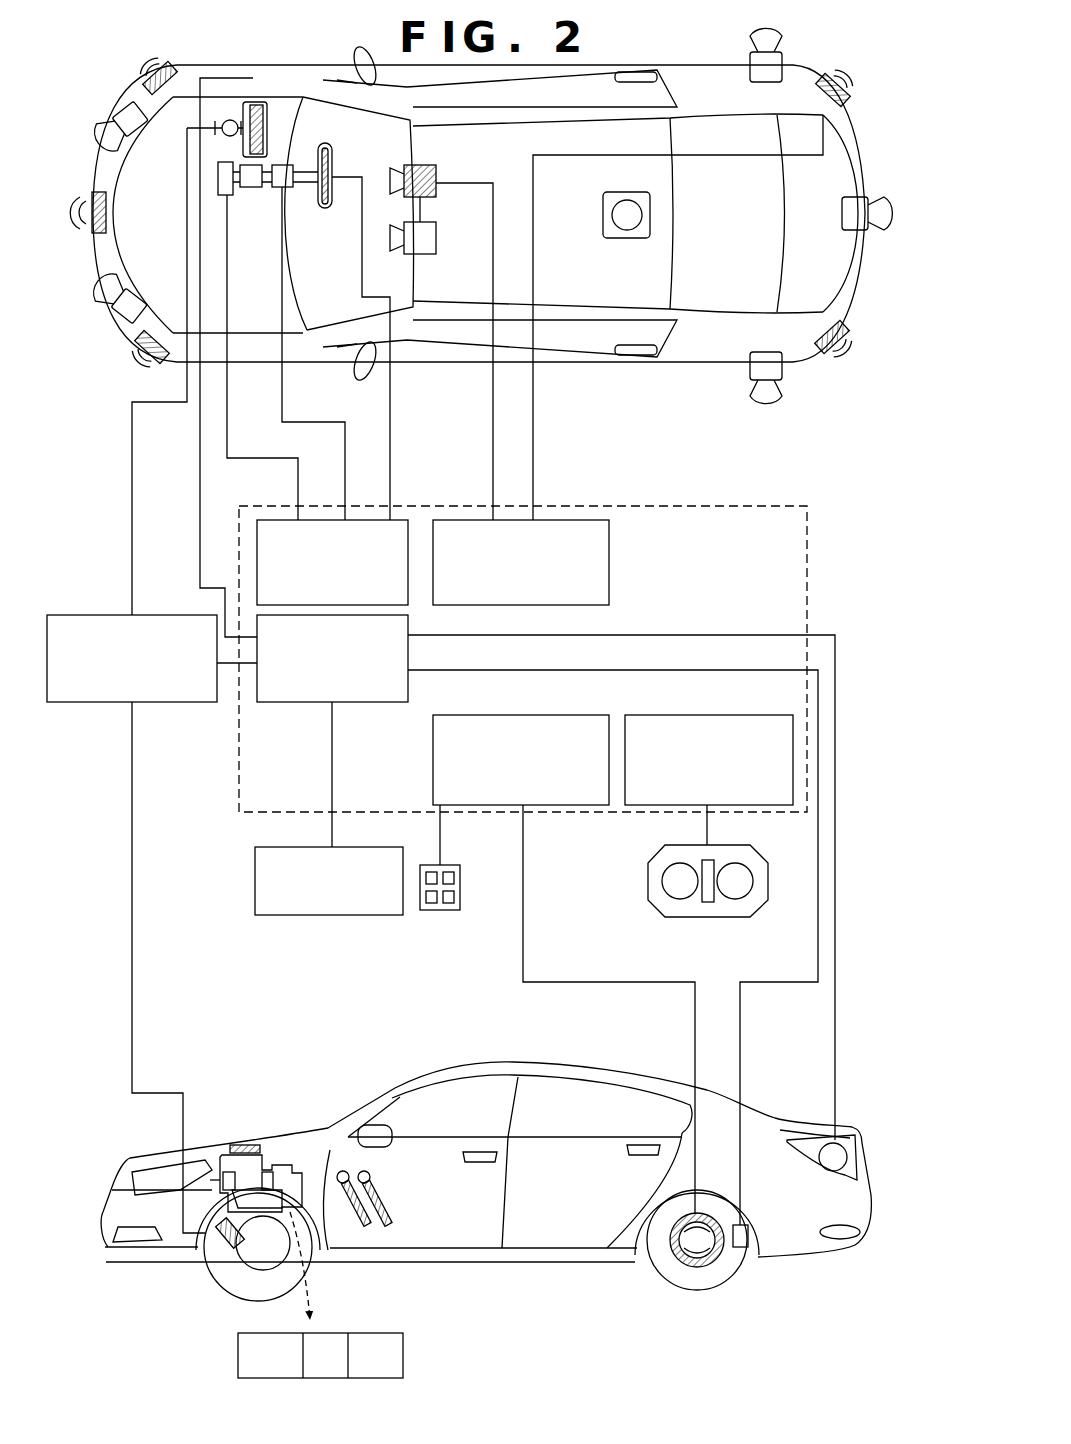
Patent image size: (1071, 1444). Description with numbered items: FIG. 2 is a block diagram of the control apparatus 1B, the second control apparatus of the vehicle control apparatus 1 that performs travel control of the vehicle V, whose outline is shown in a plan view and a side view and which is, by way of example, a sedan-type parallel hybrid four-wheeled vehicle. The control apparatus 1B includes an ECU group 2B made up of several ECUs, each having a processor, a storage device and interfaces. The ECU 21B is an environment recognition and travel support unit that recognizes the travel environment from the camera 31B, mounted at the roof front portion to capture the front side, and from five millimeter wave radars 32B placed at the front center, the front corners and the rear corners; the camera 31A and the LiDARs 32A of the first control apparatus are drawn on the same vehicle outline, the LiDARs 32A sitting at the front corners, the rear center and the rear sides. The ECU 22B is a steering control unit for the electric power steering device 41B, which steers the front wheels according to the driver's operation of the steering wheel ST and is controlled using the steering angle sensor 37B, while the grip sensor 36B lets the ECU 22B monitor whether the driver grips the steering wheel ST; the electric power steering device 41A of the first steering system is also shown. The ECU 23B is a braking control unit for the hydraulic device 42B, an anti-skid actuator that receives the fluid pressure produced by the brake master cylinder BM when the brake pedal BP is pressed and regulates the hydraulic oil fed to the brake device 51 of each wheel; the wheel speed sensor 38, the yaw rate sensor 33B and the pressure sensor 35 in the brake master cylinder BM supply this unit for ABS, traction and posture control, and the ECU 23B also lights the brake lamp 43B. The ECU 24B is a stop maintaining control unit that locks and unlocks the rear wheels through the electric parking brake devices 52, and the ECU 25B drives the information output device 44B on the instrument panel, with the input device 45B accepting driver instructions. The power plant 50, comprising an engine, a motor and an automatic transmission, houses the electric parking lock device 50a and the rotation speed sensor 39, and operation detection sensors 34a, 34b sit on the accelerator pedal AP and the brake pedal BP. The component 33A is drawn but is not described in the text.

The vehicle control apparatus 1 is at (893, 367).
The control apparatus 1B is at (880, 487).
The ECU group 2B is at (443, 500).
The ECU 21B is at (563, 520).
The ECU 22B is at (270, 520).
The ECU 23B is at (280, 703).
The ECU 24B is at (433, 762).
The ECU 25B is at (655, 805).
The camera 31A is at (420, 256).
The camera 31B is at (428, 166).
The LiDAR 32A is at (140, 134).
The millimeter wave radar 32B is at (183, 64).
The GPS receiver 33A is at (612, 240).
The yaw rate sensor 33B is at (313, 916).
The operation detection sensor 34a is at (338, 1171).
The operation detection sensor 34b is at (370, 1178).
The pressure sensor 35 is at (253, 102).
The grip sensor 36B is at (332, 162).
The steering angle sensor 37B is at (228, 196).
The wheel speed sensor 38 is at (742, 1250).
The rotation speed sensor 39 is at (262, 1171).
The electric power steering device 41A is at (255, 190).
The electric power steering device 41B is at (290, 172).
The hydraulic device 42B is at (92, 614).
The information output device 43B is at (848, 1158).
The information output device 44B is at (657, 915).
The input device 45B is at (443, 911).
The power plant 50 is at (290, 1157).
The electric parking lock device 50a is at (218, 1155).
The brake device 51 is at (238, 1250).
The electric parking brake device 52 is at (687, 1263).
The accelerator pedal AP is at (366, 1228).
The brake pedal BP is at (392, 1228).
The steering wheel ST is at (333, 147).
The brake master cylinder BM is at (267, 117).
The vehicle V is at (882, 97).